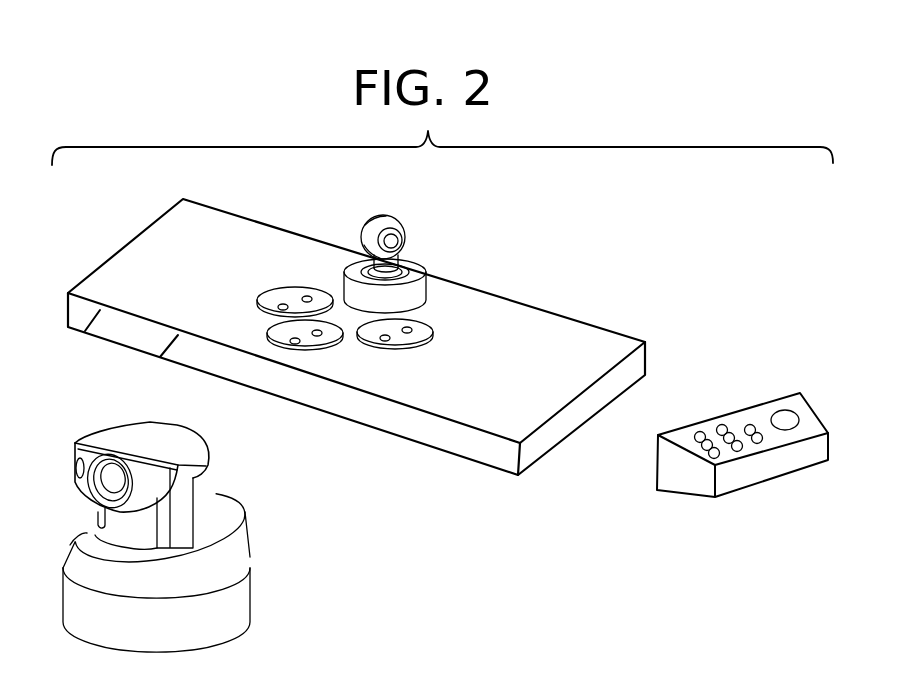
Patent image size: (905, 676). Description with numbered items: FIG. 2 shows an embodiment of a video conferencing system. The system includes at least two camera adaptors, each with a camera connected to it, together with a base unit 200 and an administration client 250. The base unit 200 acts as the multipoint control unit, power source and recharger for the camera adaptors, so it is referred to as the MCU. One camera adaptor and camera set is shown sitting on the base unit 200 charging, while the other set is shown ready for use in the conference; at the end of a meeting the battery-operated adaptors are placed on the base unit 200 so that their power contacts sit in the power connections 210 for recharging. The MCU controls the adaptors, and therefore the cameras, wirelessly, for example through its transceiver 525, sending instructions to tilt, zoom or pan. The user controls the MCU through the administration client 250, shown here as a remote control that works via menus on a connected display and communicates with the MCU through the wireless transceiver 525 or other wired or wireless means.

The base unit 200 is at (499, 466).
The power connection 210 is at (307, 342).
The administration client 250 is at (798, 393).
The transceiver 525 is at (132, 322).